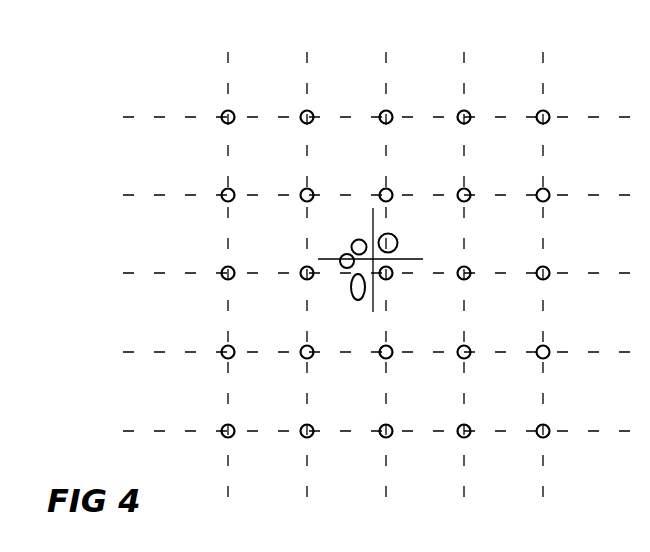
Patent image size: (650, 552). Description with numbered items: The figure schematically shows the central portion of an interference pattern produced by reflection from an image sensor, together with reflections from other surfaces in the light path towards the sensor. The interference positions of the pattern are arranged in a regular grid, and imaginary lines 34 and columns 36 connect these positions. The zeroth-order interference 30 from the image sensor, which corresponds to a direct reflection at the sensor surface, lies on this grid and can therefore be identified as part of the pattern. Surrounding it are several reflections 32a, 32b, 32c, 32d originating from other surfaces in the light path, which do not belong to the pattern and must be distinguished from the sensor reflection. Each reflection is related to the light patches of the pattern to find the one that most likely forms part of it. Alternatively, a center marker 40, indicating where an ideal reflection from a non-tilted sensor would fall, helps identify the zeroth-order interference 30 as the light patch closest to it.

The zeroth-order interference 30 is at (394, 280).
The reflection 32a is at (397, 236).
The reflection 32b is at (358, 239).
The reflection 32c is at (340, 260).
The reflection 32d is at (355, 300).
The imaginary line 34 is at (123, 117).
The imaginary column 36 is at (228, 52).
The center marker 40 is at (387, 257).